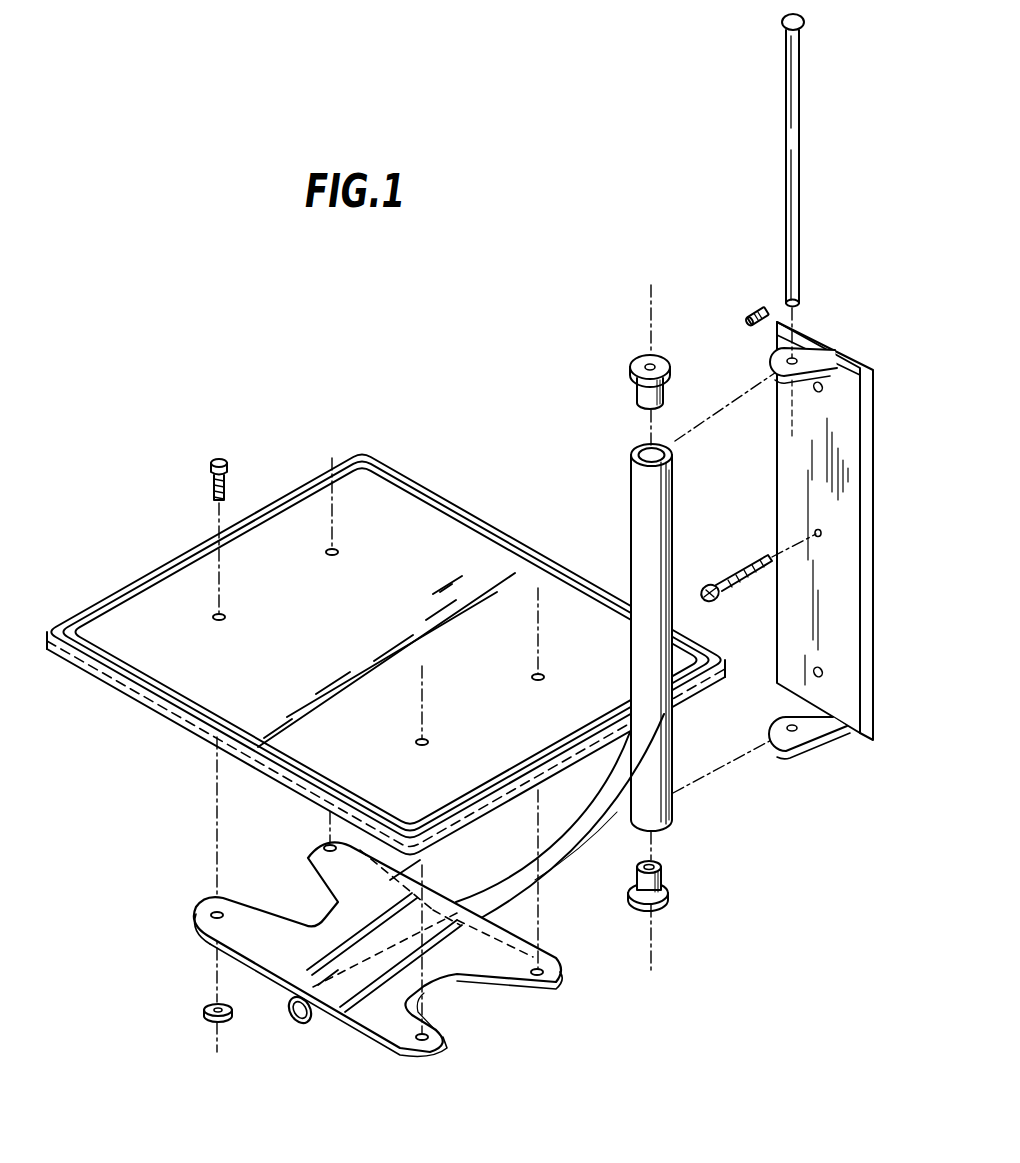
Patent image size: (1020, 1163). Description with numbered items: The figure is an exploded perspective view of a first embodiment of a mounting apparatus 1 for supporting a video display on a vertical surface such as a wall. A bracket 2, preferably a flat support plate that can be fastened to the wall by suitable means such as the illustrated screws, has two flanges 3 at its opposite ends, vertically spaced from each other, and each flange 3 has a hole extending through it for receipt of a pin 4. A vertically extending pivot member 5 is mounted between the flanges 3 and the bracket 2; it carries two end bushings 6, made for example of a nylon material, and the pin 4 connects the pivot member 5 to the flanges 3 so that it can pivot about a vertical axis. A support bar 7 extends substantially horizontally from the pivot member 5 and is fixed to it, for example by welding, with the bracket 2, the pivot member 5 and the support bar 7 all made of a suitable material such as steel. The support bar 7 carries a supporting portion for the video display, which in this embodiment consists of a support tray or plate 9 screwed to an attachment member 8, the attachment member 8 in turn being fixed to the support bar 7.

The mounting apparatus 1 is at (152, 785).
The bracket 2 is at (785, 531).
The flanges 3 is at (768, 365).
The pin 4 is at (787, 204).
The vertically extending pivot member 5 is at (630, 470).
The end bushings 6 is at (686, 358).
The support bar 7 is at (535, 884).
The attachment member 8 is at (562, 970).
The support tray or plate 9 is at (447, 493).